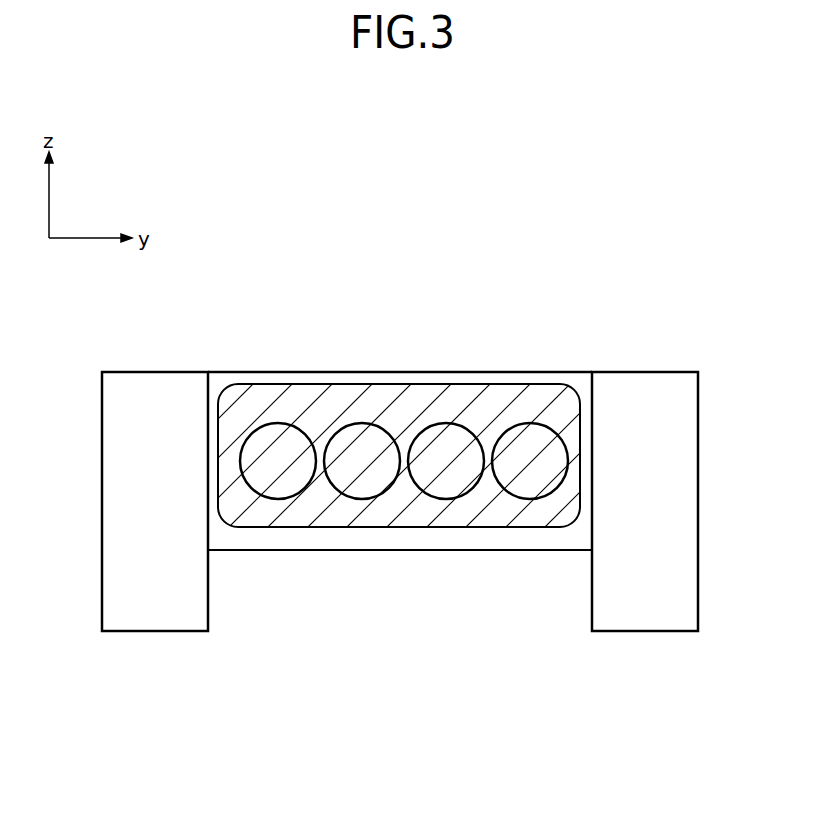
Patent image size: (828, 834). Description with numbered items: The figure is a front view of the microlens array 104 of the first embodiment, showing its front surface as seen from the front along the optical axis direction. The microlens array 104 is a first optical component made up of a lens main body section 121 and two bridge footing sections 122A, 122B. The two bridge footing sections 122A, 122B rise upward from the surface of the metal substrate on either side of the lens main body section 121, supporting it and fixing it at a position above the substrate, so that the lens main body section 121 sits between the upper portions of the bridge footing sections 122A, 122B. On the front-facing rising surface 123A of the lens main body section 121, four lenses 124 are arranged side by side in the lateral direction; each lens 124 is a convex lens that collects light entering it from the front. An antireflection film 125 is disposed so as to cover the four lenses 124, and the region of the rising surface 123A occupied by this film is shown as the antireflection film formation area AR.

The microlens array 104 is at (446, 262).
The lens main body section 121 is at (282, 372).
The bridge footing section 122A is at (162, 382).
The bridge footing section 122B is at (632, 380).
The rising surface 123A is at (570, 537).
The lens 124 is at (272, 480).
The antireflection film 125 is at (420, 397).
The antireflection film formation area AR is at (223, 525).